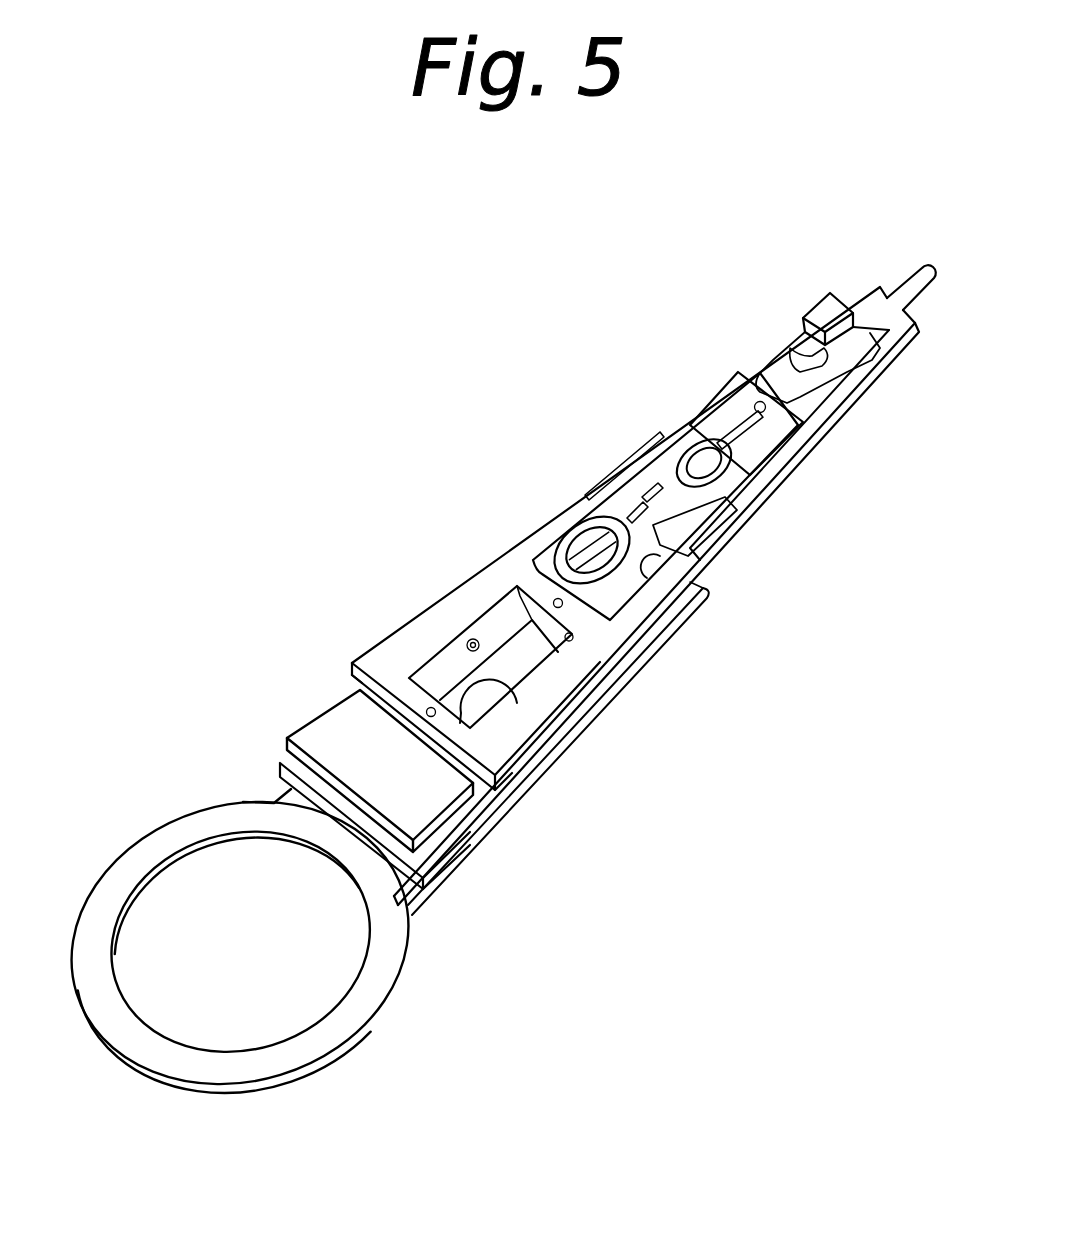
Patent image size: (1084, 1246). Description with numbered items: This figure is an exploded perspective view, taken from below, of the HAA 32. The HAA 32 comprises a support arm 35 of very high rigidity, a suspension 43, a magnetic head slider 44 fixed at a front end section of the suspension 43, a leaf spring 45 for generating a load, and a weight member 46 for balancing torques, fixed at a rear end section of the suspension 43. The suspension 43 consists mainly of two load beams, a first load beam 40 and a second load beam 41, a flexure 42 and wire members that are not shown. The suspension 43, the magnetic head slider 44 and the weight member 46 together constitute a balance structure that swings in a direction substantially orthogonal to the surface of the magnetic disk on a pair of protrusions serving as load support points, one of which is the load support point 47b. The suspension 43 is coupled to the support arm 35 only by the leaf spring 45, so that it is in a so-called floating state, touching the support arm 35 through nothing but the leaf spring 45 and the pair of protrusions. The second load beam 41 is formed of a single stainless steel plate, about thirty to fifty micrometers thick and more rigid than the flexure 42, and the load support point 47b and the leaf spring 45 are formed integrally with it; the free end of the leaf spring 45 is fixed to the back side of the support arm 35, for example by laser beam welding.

The HAA 32 is at (180, 528).
The support arm 35 is at (385, 960).
The first load beam 40 is at (431, 626).
The second load beam 41 is at (510, 612).
The flexure 42 is at (615, 511).
The suspension 43 is at (543, 377).
The magnetic head slider 44 is at (828, 315).
The leaf spring 45 is at (528, 660).
The weight member 46 is at (338, 737).
The load support point 47b is at (465, 647).